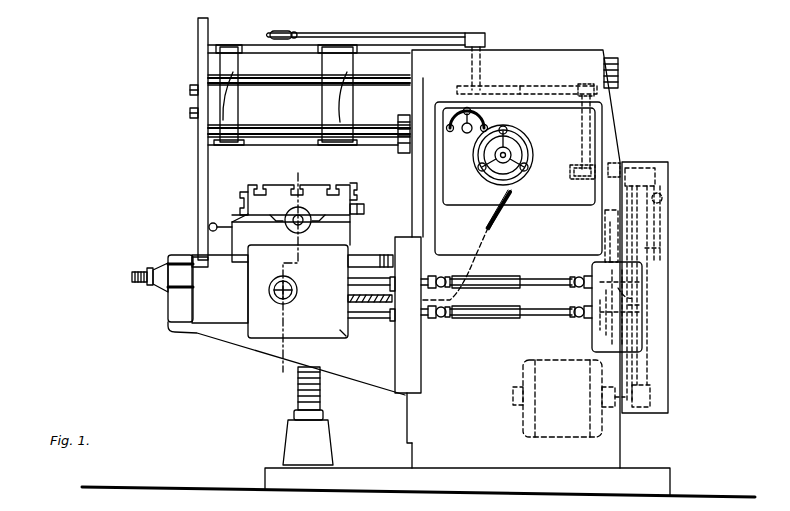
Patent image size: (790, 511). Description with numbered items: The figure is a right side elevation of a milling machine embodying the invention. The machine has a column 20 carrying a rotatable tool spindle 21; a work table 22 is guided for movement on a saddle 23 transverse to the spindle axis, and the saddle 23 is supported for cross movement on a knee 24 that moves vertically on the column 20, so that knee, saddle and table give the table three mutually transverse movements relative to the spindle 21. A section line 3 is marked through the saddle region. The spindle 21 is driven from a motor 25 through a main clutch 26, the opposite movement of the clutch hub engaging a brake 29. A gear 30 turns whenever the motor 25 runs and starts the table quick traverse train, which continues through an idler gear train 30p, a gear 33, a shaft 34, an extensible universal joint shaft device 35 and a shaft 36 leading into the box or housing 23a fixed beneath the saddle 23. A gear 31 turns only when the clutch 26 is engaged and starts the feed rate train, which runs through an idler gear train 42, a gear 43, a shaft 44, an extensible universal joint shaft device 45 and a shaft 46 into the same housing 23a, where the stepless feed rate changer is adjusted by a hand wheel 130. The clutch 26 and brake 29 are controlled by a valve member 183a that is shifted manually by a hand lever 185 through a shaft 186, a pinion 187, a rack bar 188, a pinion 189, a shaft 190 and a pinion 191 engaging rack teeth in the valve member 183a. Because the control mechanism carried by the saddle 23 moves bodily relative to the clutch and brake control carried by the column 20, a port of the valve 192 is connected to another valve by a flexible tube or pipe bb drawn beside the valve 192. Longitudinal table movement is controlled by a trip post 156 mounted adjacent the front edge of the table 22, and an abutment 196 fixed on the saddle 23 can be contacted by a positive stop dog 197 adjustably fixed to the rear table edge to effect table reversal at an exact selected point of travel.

The section line 3- 3 is at (279, 375).
The column 20 is at (568, 58).
The tool spindle 21 is at (400, 145).
The work support or table 22 is at (312, 193).
The saddle 23 is at (347, 240).
The box or housing 23a is at (338, 334).
The knee 24 is at (220, 333).
The motor 25 is at (537, 418).
The main clutch 26 is at (648, 172).
The brake 29 is at (667, 198).
The gear 30 is at (630, 203).
The idler gear train 30p is at (645, 248).
The gear 31 is at (613, 221).
The gear 33 is at (638, 290).
The shaft 34 is at (640, 312).
The extensible universal joint shaft device 35 is at (500, 278).
The shaft 36 is at (380, 278).
The idler gear train 42 is at (613, 238).
The gear 43 is at (617, 307).
The shaft 44 is at (596, 328).
The extensible universal joint shaft device 45 is at (518, 322).
The shaft 46 is at (382, 315).
The hand wheel 130 is at (270, 293).
The trip post 156 is at (238, 196).
The valve member 183a is at (610, 163).
The hand lever 185 is at (388, 36).
The shaft 186 is at (480, 62).
The pinion 187 is at (475, 88).
The rack bar 188 is at (523, 88).
The pinion 189 is at (575, 79).
The shaft 190 is at (582, 128).
The pinion 191 is at (573, 182).
The valve 192 is at (493, 218).
The abutment 196 is at (360, 215).
The positive stop dog 197 is at (352, 190).
The flexible tube or pipe bb is at (540, 223).